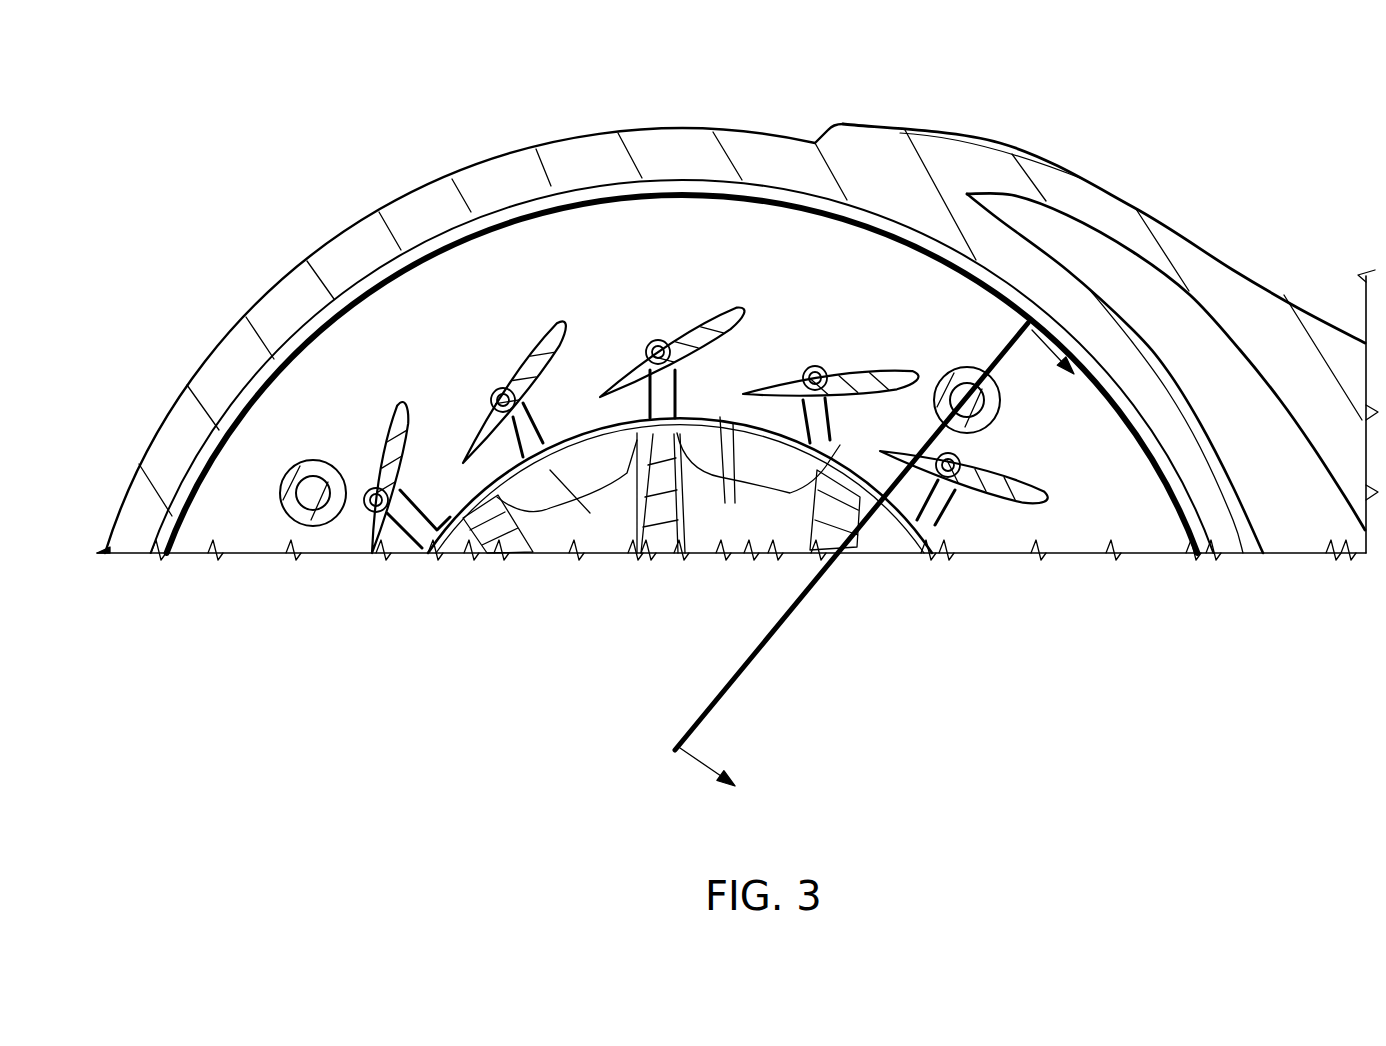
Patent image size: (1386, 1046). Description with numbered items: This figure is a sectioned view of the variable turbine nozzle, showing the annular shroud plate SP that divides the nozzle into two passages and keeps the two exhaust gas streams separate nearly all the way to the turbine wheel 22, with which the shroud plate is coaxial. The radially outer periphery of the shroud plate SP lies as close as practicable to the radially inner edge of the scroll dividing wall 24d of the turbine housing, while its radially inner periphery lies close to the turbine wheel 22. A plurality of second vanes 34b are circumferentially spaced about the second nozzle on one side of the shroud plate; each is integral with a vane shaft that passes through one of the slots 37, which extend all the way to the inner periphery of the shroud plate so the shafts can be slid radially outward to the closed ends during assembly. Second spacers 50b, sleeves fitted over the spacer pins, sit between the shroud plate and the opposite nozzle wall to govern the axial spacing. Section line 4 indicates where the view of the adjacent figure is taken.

The scroll dividing wall 24d is at (665, 155).
The turbine wheel 22 is at (550, 470).
The second vanes 34b is at (533, 362).
The slots 37 is at (800, 413).
The second spacers 50b is at (320, 470).
The shroud plate SP is at (642, 284).
The section line 4- 4 is at (874, 568).